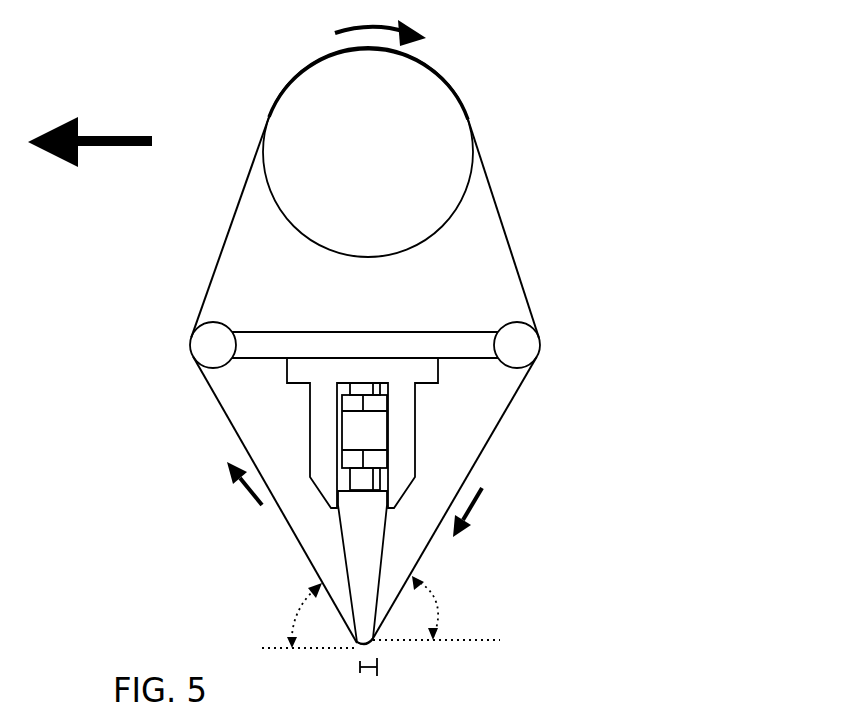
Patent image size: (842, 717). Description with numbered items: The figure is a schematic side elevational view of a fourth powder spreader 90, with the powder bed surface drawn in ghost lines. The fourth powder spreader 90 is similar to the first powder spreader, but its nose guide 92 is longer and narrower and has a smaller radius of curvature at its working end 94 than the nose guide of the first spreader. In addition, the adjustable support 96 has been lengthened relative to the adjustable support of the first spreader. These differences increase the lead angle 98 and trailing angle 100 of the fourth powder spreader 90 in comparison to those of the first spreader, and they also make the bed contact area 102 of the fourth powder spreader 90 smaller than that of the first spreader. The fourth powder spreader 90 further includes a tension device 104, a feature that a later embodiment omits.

The fourth powder spreader 90 is at (652, 162).
The nose guide 92 is at (337, 548).
The working end 94 is at (373, 642).
The adjustable support 96 is at (342, 441).
The lead angle 98 is at (280, 613).
The trailing angle 100 is at (440, 598).
The bed contact area 102 is at (370, 674).
The tension device 104 is at (457, 332).